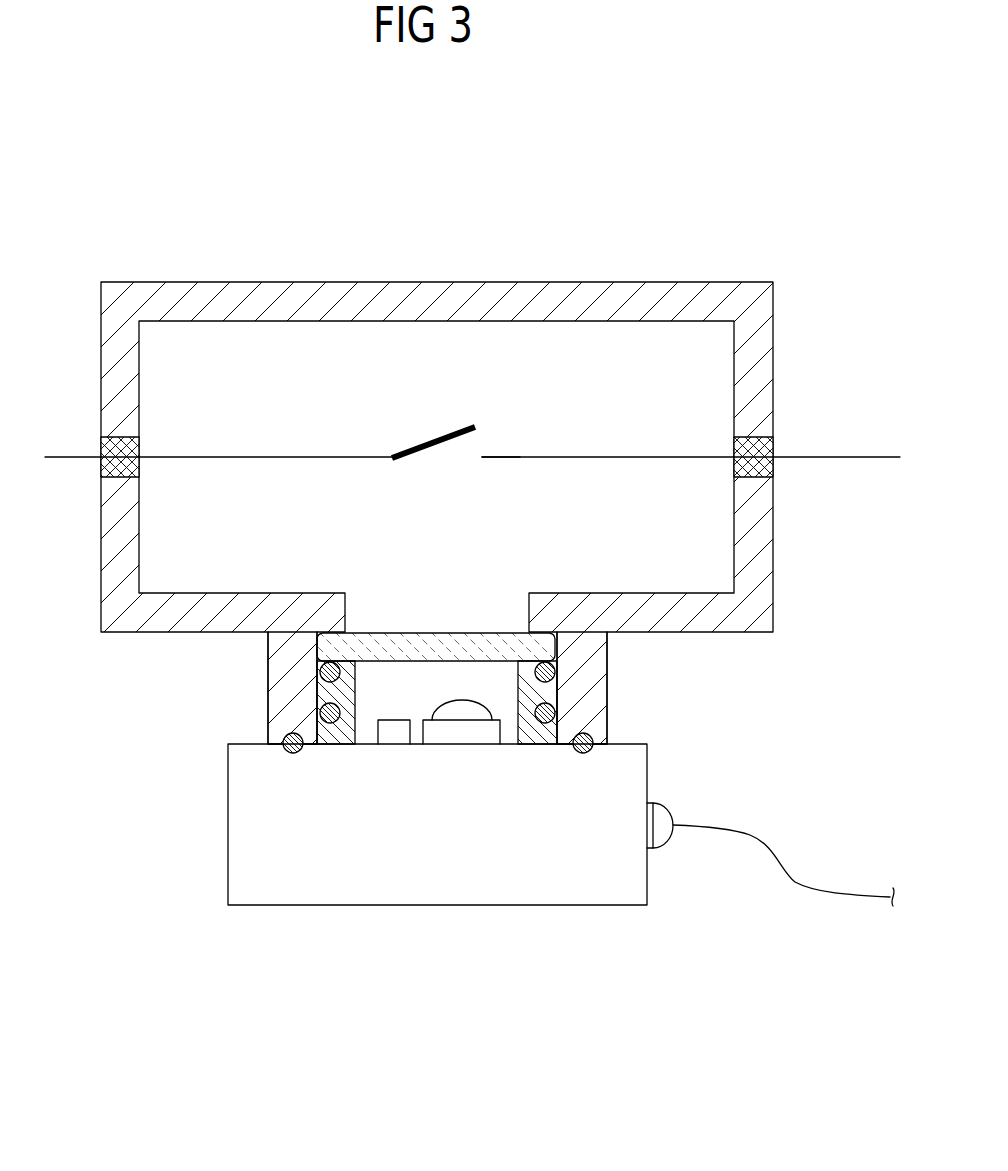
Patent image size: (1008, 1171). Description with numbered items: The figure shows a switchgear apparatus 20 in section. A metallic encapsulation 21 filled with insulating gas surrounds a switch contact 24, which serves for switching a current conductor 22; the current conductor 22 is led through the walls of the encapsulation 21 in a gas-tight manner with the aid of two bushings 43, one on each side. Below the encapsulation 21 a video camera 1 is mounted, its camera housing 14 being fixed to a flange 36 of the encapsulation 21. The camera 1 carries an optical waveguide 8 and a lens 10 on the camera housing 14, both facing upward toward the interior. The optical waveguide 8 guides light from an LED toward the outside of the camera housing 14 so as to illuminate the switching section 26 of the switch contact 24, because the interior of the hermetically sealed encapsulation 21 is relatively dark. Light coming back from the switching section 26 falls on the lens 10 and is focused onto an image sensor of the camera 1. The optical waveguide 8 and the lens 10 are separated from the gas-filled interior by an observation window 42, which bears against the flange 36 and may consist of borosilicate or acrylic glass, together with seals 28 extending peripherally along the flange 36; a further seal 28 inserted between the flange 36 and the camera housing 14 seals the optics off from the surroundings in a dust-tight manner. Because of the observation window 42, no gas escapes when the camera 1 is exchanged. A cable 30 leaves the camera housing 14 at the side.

The video camera 1 is at (598, 906).
The optical waveguide 8 is at (392, 733).
The lens 10 is at (462, 733).
The camera housing 14 is at (228, 827).
The switchgear apparatus 20 is at (245, 185).
The metallic encapsulation 21 is at (662, 281).
The current conductor 22 is at (840, 455).
The switch contact 24 is at (436, 440).
The switching section 26 is at (475, 445).
The seals 28 is at (317, 672).
The cable 30 is at (840, 895).
The flange 36 is at (268, 688).
The observation window 42 is at (441, 645).
The bushings 43 is at (101, 466).